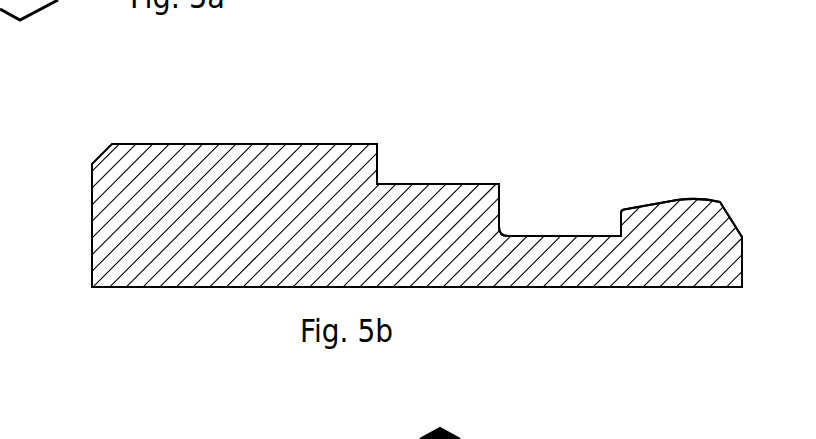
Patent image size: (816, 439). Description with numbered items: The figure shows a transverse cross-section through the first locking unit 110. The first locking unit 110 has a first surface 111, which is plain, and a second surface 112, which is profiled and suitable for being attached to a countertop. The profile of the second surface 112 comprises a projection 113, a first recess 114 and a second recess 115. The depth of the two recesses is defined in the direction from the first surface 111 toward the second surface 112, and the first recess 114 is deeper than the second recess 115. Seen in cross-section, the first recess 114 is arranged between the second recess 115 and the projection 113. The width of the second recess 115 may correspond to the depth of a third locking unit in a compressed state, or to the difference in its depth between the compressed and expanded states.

The first locking unit 110 is at (222, 168).
The first surface 111 is at (188, 287).
The second surface 112 is at (334, 144).
The projection 113 is at (673, 200).
The first recess 114 is at (540, 235).
The second recess 115 is at (377, 183).